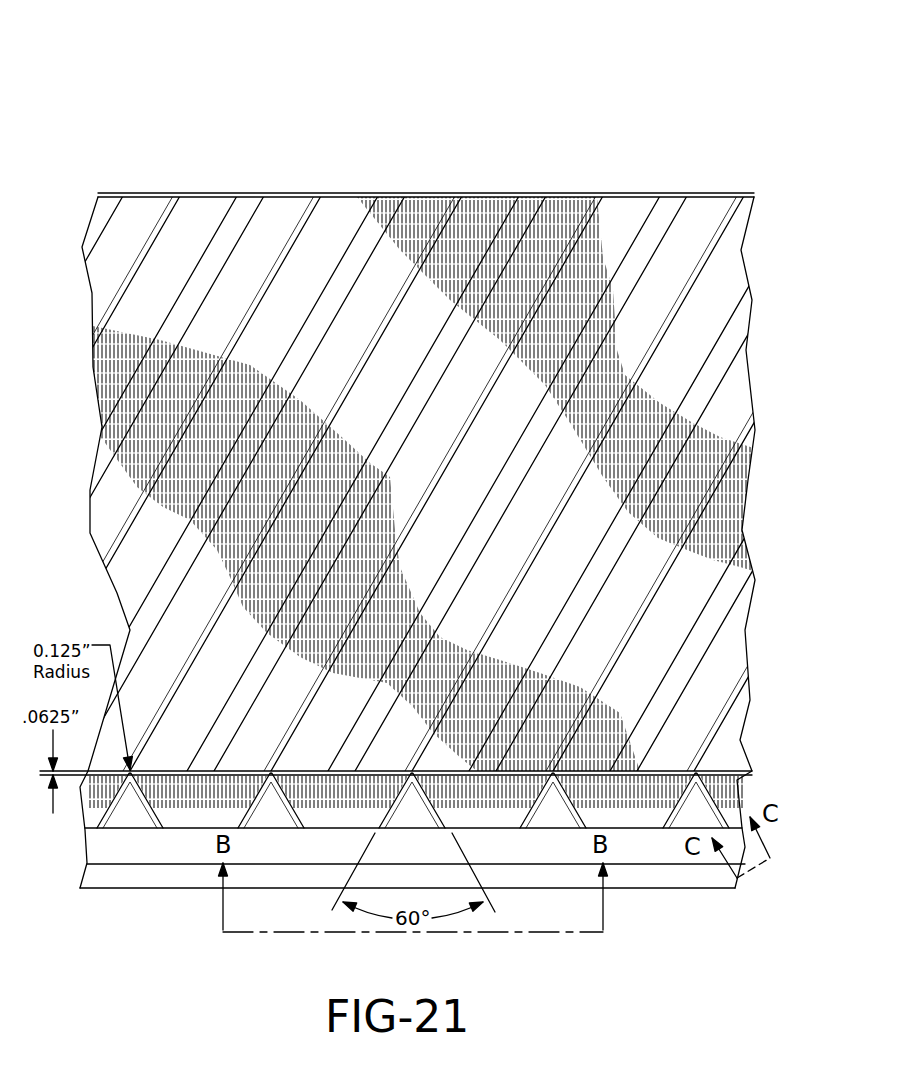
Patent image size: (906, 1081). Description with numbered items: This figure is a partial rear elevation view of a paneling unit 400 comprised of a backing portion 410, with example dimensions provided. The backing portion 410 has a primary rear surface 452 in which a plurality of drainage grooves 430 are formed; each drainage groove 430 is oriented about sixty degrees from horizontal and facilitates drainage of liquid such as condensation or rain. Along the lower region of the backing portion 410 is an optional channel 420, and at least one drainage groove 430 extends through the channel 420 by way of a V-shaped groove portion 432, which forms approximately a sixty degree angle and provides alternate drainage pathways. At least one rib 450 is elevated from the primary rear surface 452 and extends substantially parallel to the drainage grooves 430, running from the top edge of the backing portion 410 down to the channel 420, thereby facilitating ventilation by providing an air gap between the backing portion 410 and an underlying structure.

The paneling unit 400 is at (140, 120).
The backing portion 410 is at (633, 192).
The channel 420 is at (640, 817).
The drainage groove 430 is at (577, 238).
The V-shaped groove portion 432 is at (150, 817).
The rib 450 is at (362, 248).
The primary rear surface 452 is at (472, 223).